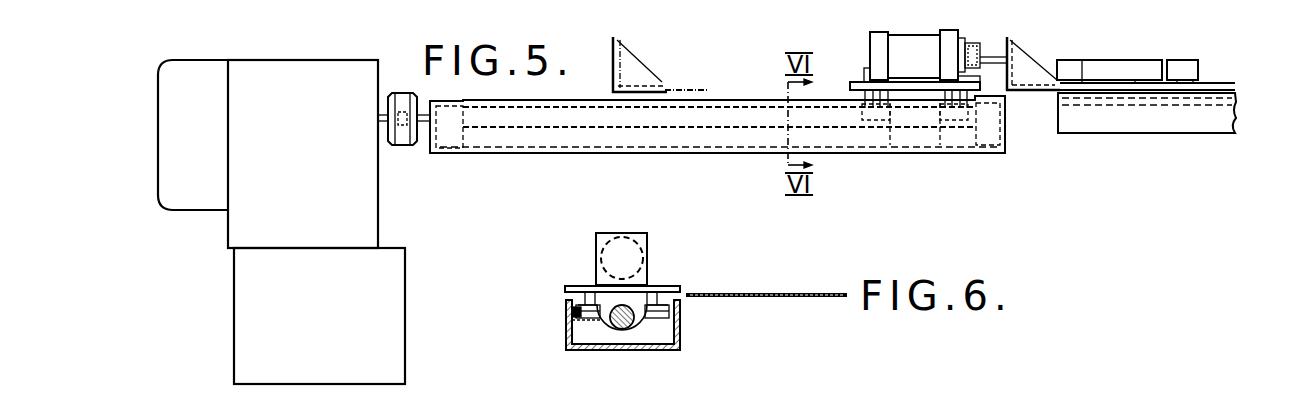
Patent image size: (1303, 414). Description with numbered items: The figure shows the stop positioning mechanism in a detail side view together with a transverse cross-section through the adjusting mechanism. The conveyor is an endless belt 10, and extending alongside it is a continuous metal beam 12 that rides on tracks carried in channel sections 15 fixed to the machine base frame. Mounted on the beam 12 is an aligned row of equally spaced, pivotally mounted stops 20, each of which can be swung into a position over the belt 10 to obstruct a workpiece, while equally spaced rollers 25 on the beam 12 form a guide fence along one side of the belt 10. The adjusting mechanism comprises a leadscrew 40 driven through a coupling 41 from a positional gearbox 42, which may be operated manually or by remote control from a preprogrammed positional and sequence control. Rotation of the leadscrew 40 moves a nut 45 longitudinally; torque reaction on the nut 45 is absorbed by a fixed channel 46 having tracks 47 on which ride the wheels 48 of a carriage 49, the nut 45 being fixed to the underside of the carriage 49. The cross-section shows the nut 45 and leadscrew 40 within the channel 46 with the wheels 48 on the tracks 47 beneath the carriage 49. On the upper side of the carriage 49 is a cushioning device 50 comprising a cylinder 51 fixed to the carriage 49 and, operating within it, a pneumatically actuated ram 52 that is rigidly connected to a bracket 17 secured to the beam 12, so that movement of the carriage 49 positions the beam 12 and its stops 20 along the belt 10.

In FIG. 6, the endless belt 10 is at (748, 292).
In FIG. 5, the continuous metal beam 12 is at (1235, 84).
In FIG. 5, the channel sections 15 is at (1176, 117).
In FIG. 5, the bracket 17 is at (630, 58).
In FIG. 5, the stops 20 is at (1112, 68).
In FIG. 5, the rollers 25 is at (1183, 68).
In FIG. 5, the leadscrew 40 is at (727, 118).
In FIG. 6, the leadscrew 40 is at (617, 328).
In FIG. 5, the coupling 41 is at (404, 92).
In FIG. 5, the positional gearbox 42 is at (281, 222).
In FIG. 5, the nut 45 is at (925, 132).
In FIG. 6, the nut 45 is at (640, 340).
In FIG. 5, the fixed channel 46 is at (532, 155).
In FIG. 6, the fixed channel 46 is at (680, 326).
In FIG. 6, the tracks 47 is at (590, 313).
In FIG. 5, the wheels 48 is at (868, 114).
In FIG. 6, the wheels 48 is at (573, 320).
In FIG. 5, the carriage 49 is at (850, 86).
In FIG. 6, the carriage 49 is at (575, 287).
In FIG. 5, the cushioning device 50 is at (912, 27).
In FIG. 5, the cylinder 51 is at (951, 41).
In FIG. 5, the pneumatically actuated ram 52 is at (993, 57).